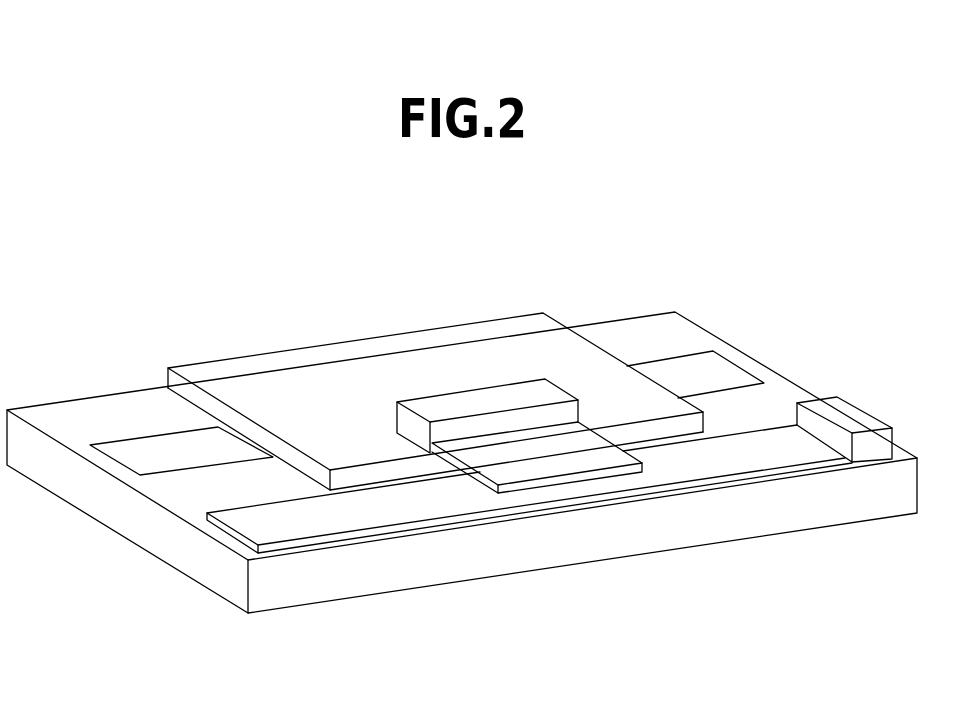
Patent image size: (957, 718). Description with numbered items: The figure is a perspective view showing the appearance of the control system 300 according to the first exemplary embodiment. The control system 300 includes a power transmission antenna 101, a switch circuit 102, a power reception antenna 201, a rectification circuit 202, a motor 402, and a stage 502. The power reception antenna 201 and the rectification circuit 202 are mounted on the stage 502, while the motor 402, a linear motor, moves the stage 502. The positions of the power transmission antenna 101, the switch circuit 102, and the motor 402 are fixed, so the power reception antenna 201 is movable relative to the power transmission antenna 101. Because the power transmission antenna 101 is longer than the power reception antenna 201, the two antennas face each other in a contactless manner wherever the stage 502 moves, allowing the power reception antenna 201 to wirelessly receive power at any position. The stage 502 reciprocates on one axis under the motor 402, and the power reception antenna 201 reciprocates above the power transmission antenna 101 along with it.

The control system 300 is at (745, 292).
The power transmission antenna 101 is at (350, 512).
The switch circuit 102 is at (850, 417).
The power reception antenna 201 is at (557, 460).
The rectification circuit 202 is at (474, 403).
The motor 402 is at (147, 452).
The stage 502 is at (318, 360).